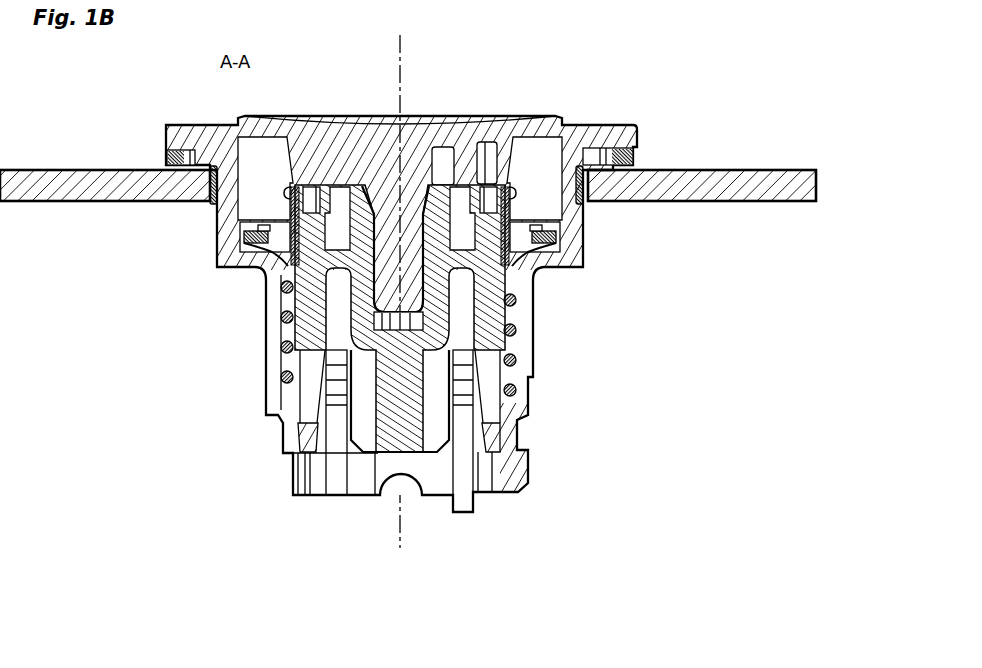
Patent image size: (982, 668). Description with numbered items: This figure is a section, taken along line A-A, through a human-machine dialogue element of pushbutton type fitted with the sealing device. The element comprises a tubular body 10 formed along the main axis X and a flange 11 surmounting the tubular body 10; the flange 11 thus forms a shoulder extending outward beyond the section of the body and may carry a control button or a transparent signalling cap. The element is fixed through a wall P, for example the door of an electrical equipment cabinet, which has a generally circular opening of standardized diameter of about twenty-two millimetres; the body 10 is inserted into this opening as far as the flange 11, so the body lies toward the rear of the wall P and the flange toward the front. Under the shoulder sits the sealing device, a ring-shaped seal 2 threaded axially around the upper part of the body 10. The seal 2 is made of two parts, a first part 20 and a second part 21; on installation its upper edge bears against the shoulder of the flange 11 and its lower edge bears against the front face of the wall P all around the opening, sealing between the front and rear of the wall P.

The tubular body 10 is at (533, 327).
The flange 11 is at (175, 133).
The seal 2 is at (167, 158).
The second part 21 is at (623, 158).
The first part 20 is at (582, 200).
The wall P is at (727, 177).
The main axis X is at (416, 291).